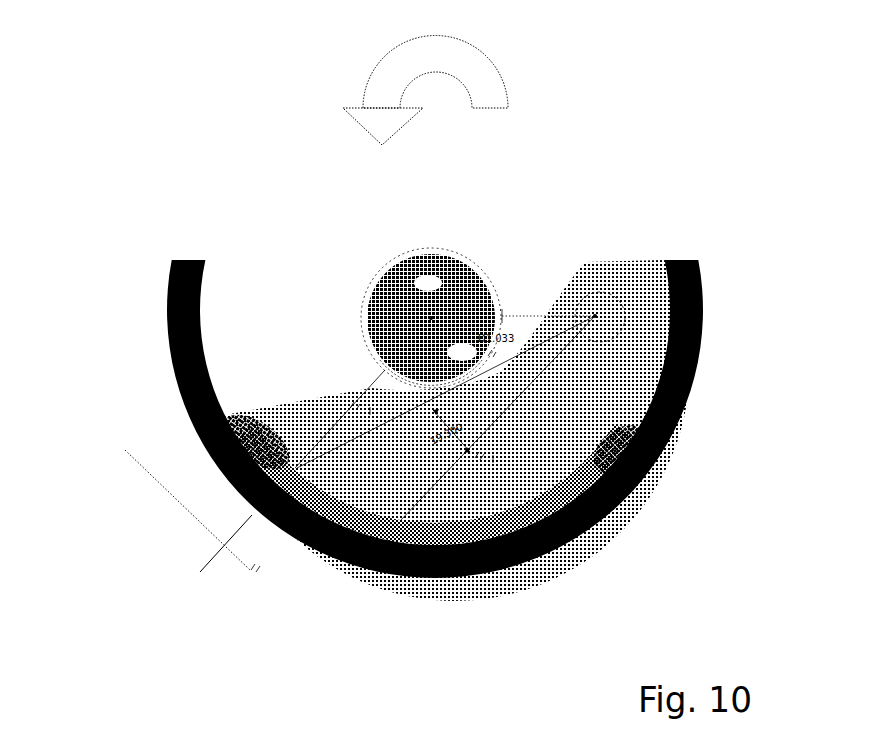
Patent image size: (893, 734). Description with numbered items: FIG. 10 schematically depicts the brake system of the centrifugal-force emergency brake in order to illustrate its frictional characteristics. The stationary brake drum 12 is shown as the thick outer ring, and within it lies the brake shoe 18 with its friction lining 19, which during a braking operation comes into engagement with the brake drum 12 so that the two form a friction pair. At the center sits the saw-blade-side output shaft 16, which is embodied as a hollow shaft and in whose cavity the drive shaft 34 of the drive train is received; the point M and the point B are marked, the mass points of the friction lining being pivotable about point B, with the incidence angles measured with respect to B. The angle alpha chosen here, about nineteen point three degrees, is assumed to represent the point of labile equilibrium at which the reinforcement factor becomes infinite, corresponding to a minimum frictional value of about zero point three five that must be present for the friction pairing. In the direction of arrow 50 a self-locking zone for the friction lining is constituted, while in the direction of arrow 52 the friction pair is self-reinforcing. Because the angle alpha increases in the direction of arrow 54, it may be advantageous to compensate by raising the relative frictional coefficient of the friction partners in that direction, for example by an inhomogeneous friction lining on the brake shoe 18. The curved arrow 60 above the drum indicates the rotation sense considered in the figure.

The brake drum 12 is at (600, 527).
The output shaft 16 is at (374, 300).
The brake shoe 18 is at (640, 379).
The friction lining 19 is at (467, 524).
The drive shaft 34 is at (449, 301).
The arrow 50 is at (123, 480).
The arrow 52 is at (239, 577).
The arrow 54 is at (236, 436).
The rotation direction arrow 60 is at (470, 69).
The ball center point M is at (431, 303).
The point B is at (605, 268).